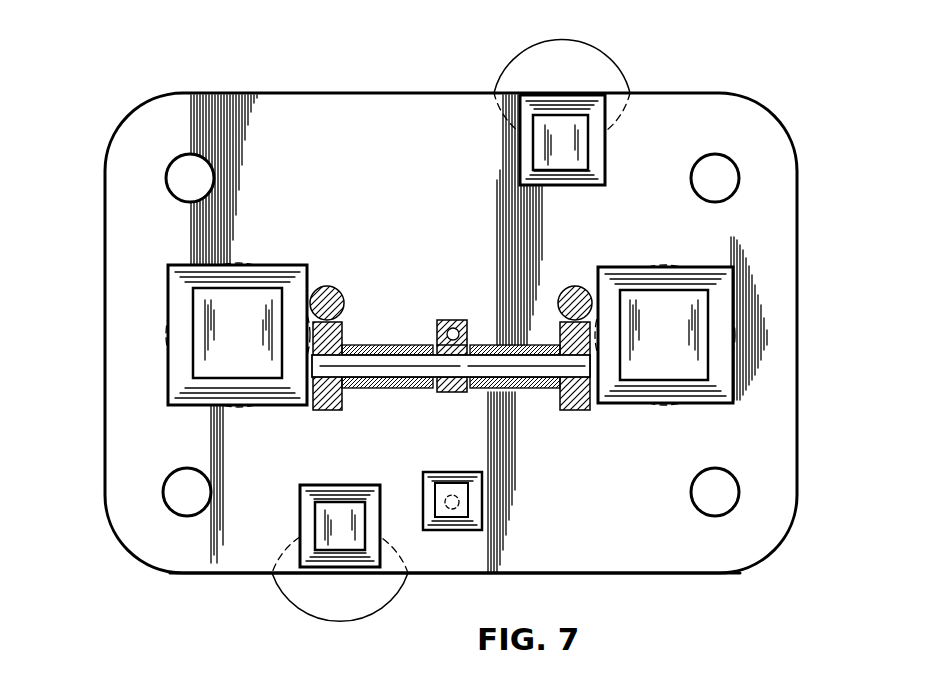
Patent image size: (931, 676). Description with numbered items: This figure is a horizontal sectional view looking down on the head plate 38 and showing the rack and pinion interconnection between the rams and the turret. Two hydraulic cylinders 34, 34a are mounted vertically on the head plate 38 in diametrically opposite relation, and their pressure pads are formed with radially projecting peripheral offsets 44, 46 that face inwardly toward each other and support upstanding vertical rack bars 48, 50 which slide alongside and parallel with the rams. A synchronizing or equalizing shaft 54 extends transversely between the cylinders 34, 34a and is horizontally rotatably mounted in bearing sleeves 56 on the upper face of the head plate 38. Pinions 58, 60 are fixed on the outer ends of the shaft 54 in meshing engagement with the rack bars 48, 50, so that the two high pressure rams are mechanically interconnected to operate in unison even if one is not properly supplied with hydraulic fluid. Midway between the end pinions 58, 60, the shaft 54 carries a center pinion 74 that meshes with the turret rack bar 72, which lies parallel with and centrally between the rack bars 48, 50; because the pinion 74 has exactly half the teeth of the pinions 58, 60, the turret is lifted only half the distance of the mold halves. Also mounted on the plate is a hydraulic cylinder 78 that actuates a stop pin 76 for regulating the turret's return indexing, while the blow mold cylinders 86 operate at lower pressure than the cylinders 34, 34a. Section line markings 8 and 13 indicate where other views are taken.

The section line 8- 8 is at (43, 318).
The section line 13- 13 is at (572, 238).
The hydraulic cylinder 34 is at (723, 390).
The hydraulic cylinder 34a is at (160, 388).
The head plate 38 is at (592, 567).
The peripheral offset 44 is at (595, 276).
The peripheral offset 46 is at (322, 290).
The rack bar 48 is at (578, 298).
The rack bar 50 is at (335, 306).
The synchronizing or equalizing shaft 54 is at (474, 372).
The bearing sleeve 56 is at (388, 390).
The pinion 58 is at (568, 412).
The pinion 60 is at (320, 400).
The turret rack bar 72 is at (453, 320).
The pinion 74 is at (452, 393).
The stop pin 76 is at (457, 508).
The hydraulic cylinder 78 is at (487, 513).
The blow mold cylinder 86 is at (596, 115).